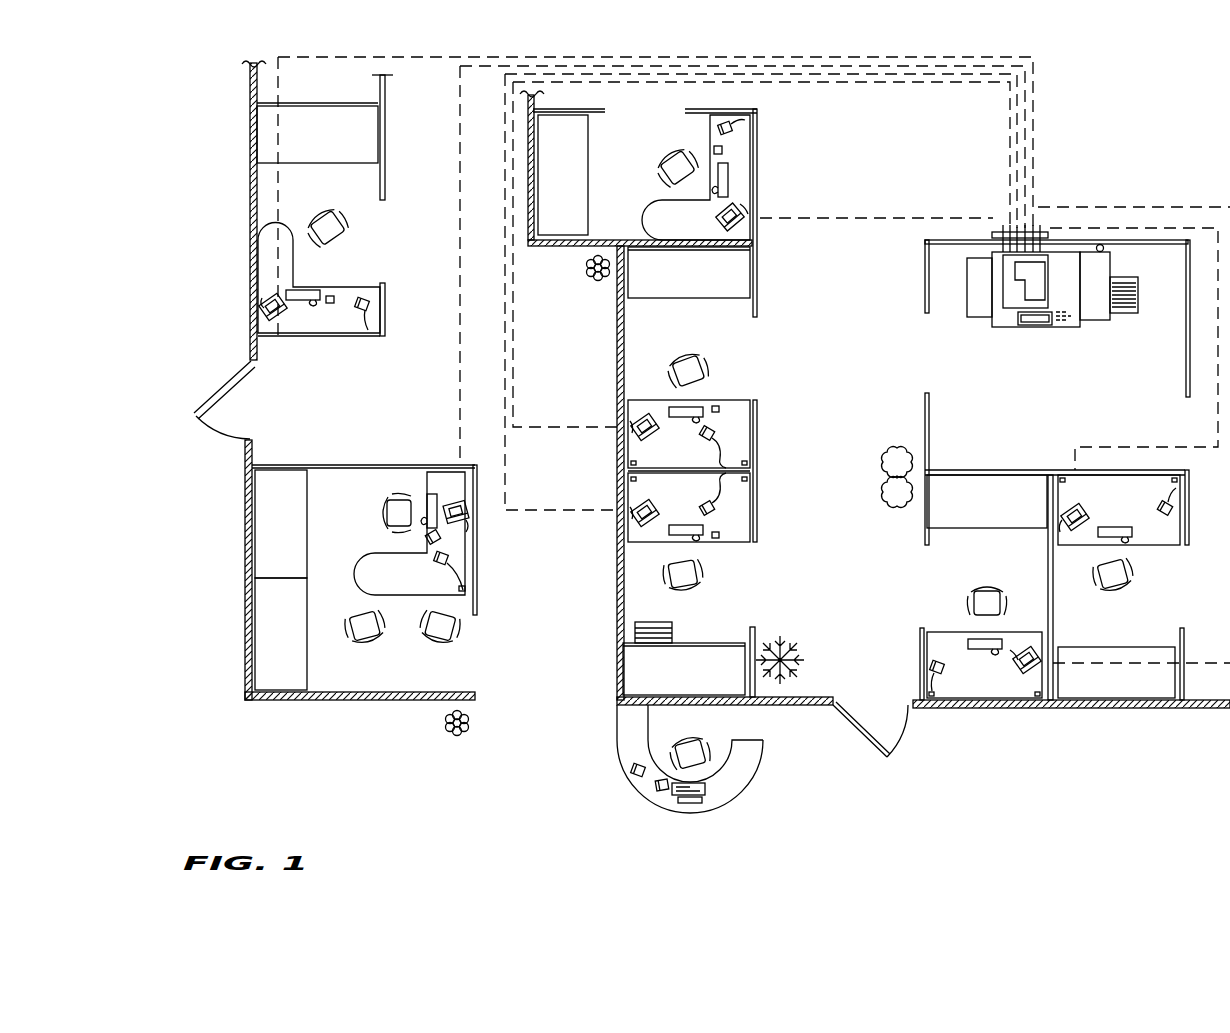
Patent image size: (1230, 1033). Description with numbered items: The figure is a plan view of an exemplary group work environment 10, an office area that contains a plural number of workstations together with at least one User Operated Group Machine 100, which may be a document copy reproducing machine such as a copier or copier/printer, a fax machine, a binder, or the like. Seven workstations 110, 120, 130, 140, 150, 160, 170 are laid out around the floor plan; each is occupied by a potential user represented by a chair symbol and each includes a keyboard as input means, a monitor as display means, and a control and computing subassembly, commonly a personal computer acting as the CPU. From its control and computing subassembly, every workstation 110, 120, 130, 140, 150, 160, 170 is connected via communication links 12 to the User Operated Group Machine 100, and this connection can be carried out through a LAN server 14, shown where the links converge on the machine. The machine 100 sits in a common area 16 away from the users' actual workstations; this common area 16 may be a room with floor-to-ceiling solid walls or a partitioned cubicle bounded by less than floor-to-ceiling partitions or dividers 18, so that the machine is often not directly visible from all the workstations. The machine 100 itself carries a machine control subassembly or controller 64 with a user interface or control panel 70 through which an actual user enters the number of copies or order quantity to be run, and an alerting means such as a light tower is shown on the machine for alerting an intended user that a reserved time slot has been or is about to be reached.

The group work environment 10 is at (257, 45).
The communication links 12 is at (453, 130).
The LAN server 14 is at (990, 240).
The common area 16 is at (1151, 270).
The partitions or dividers 18 is at (926, 300).
The machine control subassembly or controller 64 is at (1012, 330).
The user interface or control panel 70 is at (1040, 323).
The User Operated Group Machine 100 is at (1075, 336).
The workstation 110 is at (296, 208).
The workstation 120 is at (357, 494).
The workstation 130 is at (744, 160).
The workstation 140 is at (729, 384).
The workstation 150 is at (639, 556).
The workstation 160 is at (987, 678).
The workstation 170 is at (1139, 579).